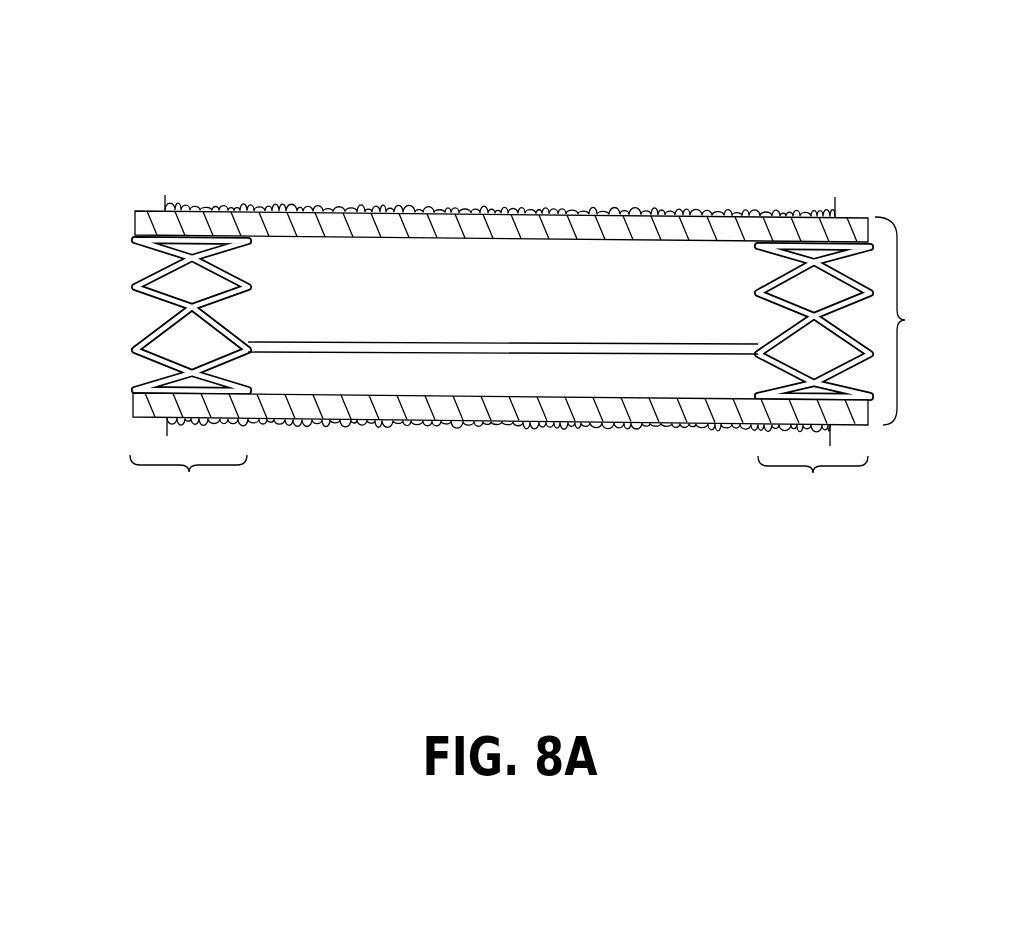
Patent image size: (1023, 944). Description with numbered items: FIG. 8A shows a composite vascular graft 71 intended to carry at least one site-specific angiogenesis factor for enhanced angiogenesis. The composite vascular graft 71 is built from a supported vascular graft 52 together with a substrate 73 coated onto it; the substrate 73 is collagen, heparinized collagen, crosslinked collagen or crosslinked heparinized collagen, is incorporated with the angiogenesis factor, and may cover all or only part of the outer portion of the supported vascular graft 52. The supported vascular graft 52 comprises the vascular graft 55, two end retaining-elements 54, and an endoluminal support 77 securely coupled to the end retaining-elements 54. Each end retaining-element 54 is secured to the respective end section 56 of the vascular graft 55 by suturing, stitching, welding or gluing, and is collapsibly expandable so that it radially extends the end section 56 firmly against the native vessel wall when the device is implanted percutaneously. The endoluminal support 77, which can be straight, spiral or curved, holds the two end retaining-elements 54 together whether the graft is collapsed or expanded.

The composite vascular graft 71 is at (846, 155).
The substrate 73 is at (808, 212).
The vascular graft 55 is at (858, 232).
The supported vascular graft 52 is at (915, 321).
The end section 56 is at (499, 489).
The end retaining-element 54 is at (140, 366).
The endoluminal support 77 is at (378, 340).